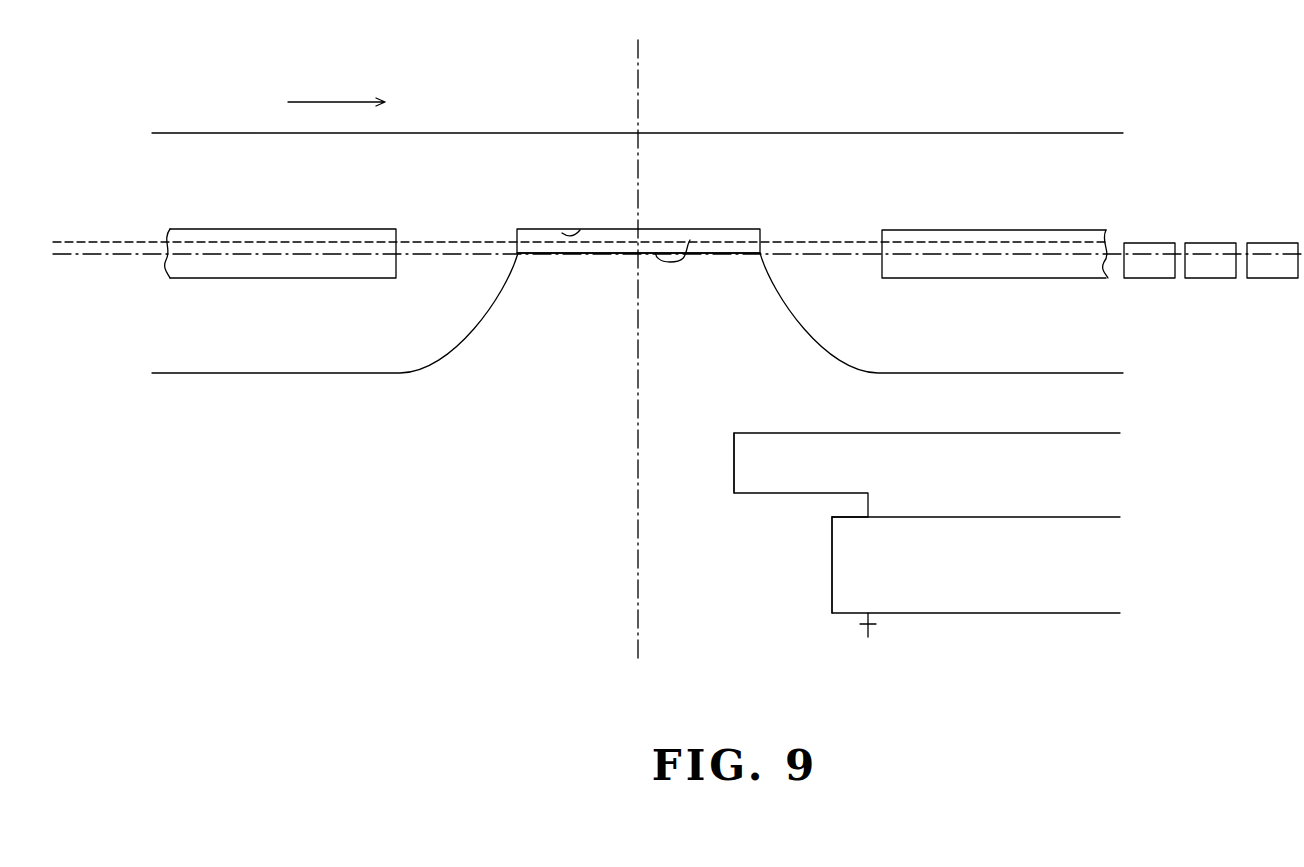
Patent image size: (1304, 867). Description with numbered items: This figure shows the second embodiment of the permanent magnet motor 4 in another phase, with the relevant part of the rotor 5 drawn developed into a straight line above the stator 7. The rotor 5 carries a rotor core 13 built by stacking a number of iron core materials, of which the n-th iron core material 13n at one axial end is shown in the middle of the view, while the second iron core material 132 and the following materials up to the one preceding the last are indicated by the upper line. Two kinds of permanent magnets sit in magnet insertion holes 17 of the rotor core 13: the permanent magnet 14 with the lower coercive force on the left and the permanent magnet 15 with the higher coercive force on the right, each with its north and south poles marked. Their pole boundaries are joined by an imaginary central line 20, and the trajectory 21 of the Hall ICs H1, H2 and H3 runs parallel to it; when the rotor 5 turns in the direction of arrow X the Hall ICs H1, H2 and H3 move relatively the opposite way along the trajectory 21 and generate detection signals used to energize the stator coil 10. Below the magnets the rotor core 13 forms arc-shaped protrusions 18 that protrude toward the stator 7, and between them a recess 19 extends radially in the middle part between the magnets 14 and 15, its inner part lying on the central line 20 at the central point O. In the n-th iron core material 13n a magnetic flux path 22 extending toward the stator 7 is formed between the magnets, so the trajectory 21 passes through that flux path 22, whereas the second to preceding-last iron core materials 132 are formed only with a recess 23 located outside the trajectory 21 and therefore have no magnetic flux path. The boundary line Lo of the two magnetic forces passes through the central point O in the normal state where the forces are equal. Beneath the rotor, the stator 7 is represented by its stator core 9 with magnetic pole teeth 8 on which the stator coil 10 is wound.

The permanent magnet motor 4 is at (1086, 95).
The rotor 5 is at (1105, 173).
The stator 7 is at (1150, 447).
The magnetic pole teeth 8 is at (746, 463).
The stator core 9 is at (868, 624).
The stator coil 10 is at (846, 572).
The rotor core 13 is at (757, 133).
The second iron core material 132 is at (503, 156).
The n-th iron core material 13n is at (570, 256).
The permanent magnet with lower coercive force 14 is at (234, 229).
The permanent magnet with higher coercive force 15 is at (917, 230).
The magnet insertion holes 17 is at (393, 240).
The protrusions 18 is at (270, 375).
The recess 19 is at (690, 240).
The central line 20 is at (830, 256).
The trajectory 21 is at (437, 241).
The magnetic flux path 22 is at (720, 249).
The recess 23 is at (580, 230).
The central point O is at (640, 253).
The boundary line Lo is at (639, 369).
The direction of rotation X is at (336, 92).
The Hall IC H1 is at (1150, 280).
The Hall IC H2 is at (1212, 280).
The Hall IC H3 is at (1275, 280).